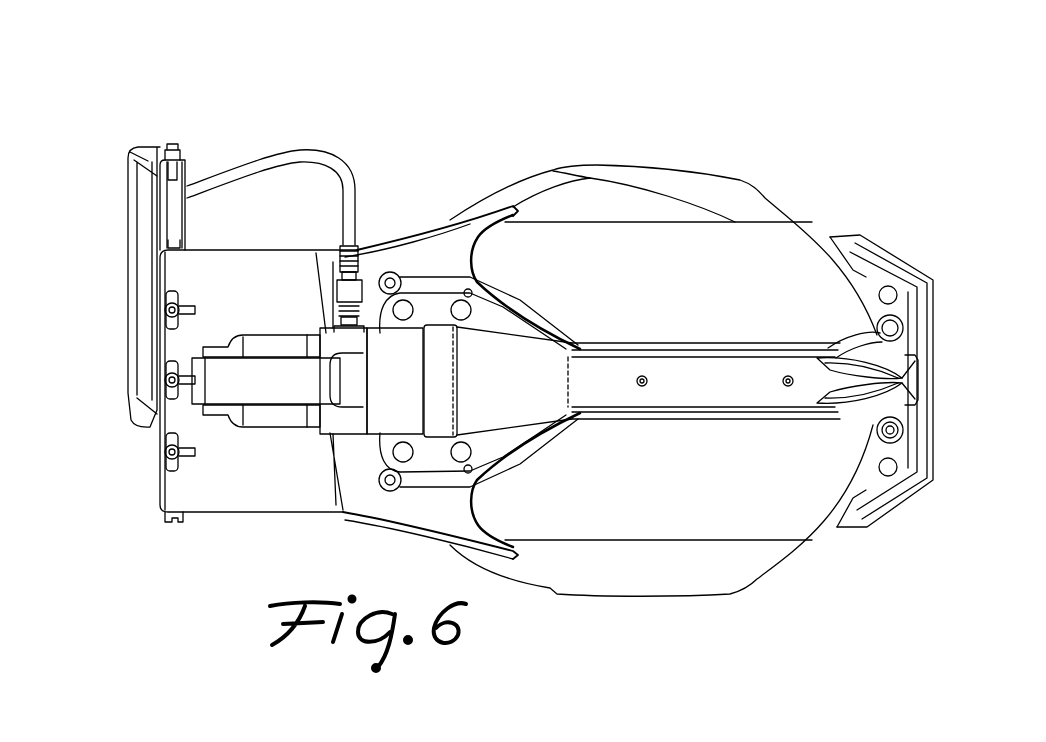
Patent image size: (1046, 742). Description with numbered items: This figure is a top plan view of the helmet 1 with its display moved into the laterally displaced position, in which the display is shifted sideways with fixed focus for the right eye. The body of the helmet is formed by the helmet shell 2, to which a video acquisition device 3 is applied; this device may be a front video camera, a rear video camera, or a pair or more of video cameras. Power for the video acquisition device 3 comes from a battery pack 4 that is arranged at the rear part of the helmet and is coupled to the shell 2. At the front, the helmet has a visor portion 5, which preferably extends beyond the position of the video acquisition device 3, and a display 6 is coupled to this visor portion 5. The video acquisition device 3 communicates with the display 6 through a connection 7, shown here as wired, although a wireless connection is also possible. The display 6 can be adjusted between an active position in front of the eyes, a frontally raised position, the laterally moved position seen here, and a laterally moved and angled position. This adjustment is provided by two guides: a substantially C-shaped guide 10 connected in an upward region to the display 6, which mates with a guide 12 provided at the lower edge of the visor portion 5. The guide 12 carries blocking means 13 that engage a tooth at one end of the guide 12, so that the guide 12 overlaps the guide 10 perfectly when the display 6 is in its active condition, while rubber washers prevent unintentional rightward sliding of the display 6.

The helmet 1 is at (829, 149).
The helmet shell 2 is at (767, 500).
The video acquisition device 3 is at (272, 387).
The battery pack 4 is at (896, 508).
The visor portion 5 is at (420, 250).
The display 6 is at (133, 197).
The connection 7 is at (302, 155).
The guide 10 is at (190, 222).
The guide 12 is at (158, 353).
The blocking means 13 is at (160, 298).